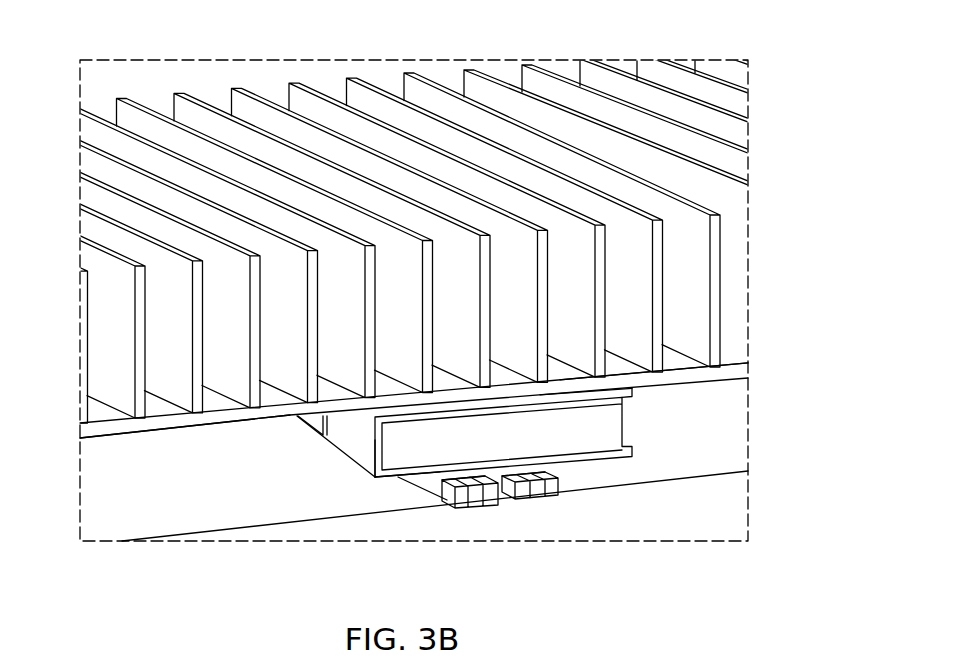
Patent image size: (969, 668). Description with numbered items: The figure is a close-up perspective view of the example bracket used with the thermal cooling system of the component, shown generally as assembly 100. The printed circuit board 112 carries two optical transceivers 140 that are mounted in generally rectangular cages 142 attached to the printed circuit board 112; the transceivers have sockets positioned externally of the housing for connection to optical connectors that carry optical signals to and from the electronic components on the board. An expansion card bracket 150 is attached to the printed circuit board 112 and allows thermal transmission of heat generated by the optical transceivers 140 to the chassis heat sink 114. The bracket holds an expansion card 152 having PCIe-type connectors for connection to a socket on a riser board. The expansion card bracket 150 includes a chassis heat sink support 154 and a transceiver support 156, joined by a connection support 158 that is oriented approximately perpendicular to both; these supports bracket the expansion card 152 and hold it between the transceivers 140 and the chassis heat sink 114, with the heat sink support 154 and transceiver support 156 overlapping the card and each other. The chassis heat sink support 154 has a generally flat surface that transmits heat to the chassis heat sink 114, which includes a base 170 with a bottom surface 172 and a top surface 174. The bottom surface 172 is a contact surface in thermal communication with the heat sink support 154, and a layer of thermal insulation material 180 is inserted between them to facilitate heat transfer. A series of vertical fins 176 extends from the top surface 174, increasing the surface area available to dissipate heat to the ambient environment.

The electronic assembly 100 is at (122, 86).
The printed circuit board 112 is at (213, 507).
The chassis heat sink 114 is at (123, 327).
The optical transceivers 140 is at (468, 508).
The cages 142 is at (440, 490).
The expansion card bracket 150 is at (320, 437).
The expansion card 152 is at (612, 433).
The chassis heat sink support 154 is at (632, 398).
The transceiver support 156 is at (415, 478).
The connection support 158 is at (372, 452).
The base 170 is at (123, 435).
The bottom surface 172 is at (197, 430).
The top surface 174 is at (650, 355).
The vertical fins 176 is at (295, 128).
The layer of thermal insulation material 180 is at (565, 397).